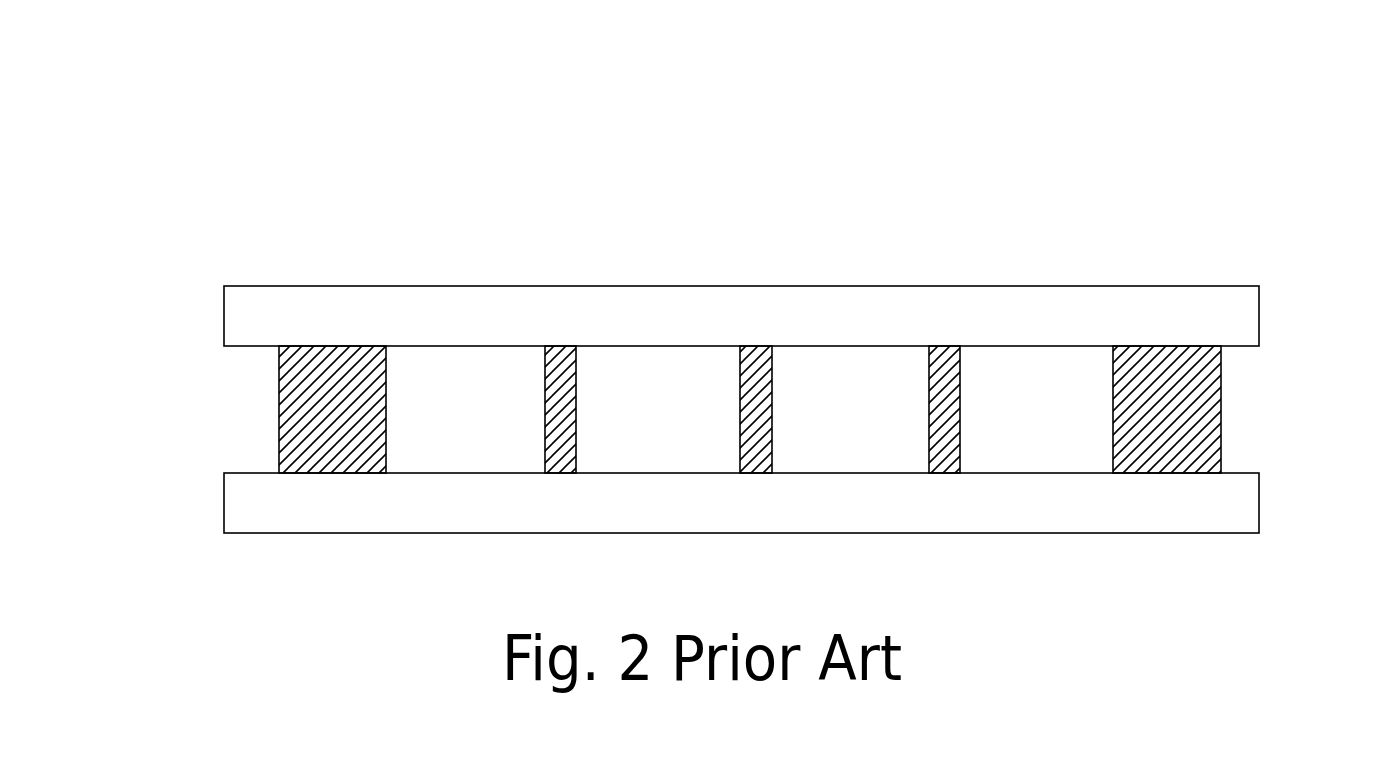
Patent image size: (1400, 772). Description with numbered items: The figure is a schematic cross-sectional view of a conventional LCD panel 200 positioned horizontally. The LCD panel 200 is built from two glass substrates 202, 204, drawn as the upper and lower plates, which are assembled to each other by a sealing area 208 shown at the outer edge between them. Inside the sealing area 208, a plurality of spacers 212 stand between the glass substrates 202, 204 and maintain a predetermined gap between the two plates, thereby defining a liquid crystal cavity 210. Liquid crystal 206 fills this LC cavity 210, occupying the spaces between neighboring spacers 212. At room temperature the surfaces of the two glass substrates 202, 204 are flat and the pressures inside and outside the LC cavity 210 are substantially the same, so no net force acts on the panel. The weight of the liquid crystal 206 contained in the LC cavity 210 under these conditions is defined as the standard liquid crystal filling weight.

The LCD panel 200 is at (1228, 148).
The glass substrate 202 is at (223, 315).
The glass substrate 204 is at (223, 505).
The liquid crystal 206 is at (448, 375).
The sealing area 208 is at (297, 408).
The liquid crystal cavity 210 is at (482, 356).
The spacer 212 is at (558, 367).